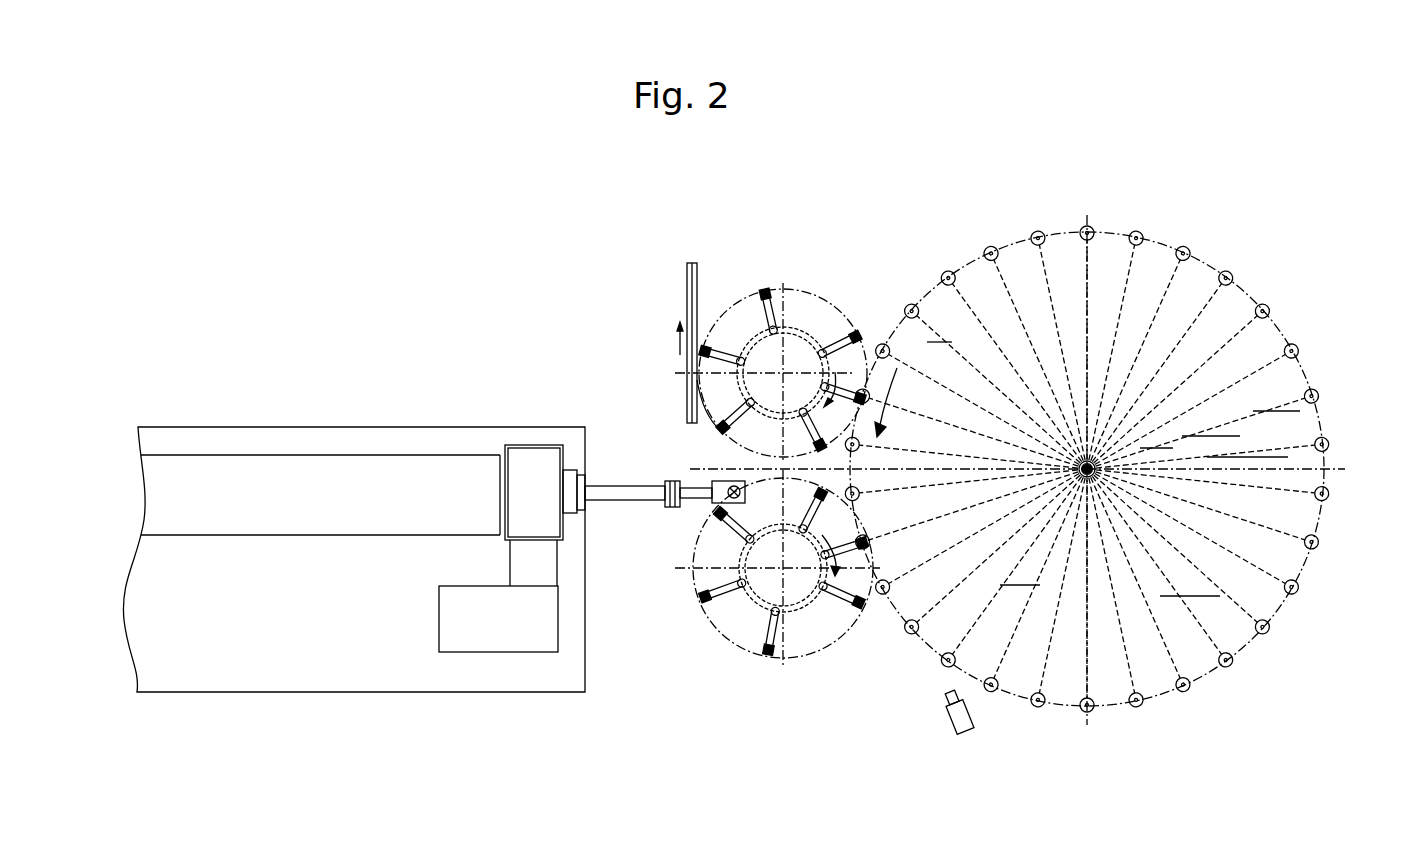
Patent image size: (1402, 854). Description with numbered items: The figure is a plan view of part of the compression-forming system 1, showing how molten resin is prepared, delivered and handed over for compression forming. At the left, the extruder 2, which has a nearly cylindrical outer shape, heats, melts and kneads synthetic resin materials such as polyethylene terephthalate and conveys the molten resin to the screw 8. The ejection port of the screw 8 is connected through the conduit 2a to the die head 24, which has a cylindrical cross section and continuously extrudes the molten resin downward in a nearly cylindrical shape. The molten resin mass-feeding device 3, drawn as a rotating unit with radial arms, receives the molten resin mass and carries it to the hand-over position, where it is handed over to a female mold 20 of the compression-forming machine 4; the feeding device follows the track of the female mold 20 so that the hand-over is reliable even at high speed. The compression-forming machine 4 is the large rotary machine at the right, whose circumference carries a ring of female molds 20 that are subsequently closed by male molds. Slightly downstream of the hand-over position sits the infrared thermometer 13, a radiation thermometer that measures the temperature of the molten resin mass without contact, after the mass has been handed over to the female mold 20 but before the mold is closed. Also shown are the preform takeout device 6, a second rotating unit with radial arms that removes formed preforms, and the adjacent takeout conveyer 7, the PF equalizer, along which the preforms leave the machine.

The compression-forming system 1 is at (493, 305).
The extruder 2 is at (181, 440).
The conduit 2a is at (625, 495).
The molten resin mass-feeding device 3 is at (687, 652).
The compression-forming machine 4 is at (1107, 265).
The preform takeout device 6 is at (818, 310).
The takeout conveyer (PF equalizer) 7 is at (690, 278).
The screw 8 is at (531, 478).
The infrared thermometer 13 is at (963, 735).
The female mold 20 is at (988, 250).
The die head 24 is at (722, 483).